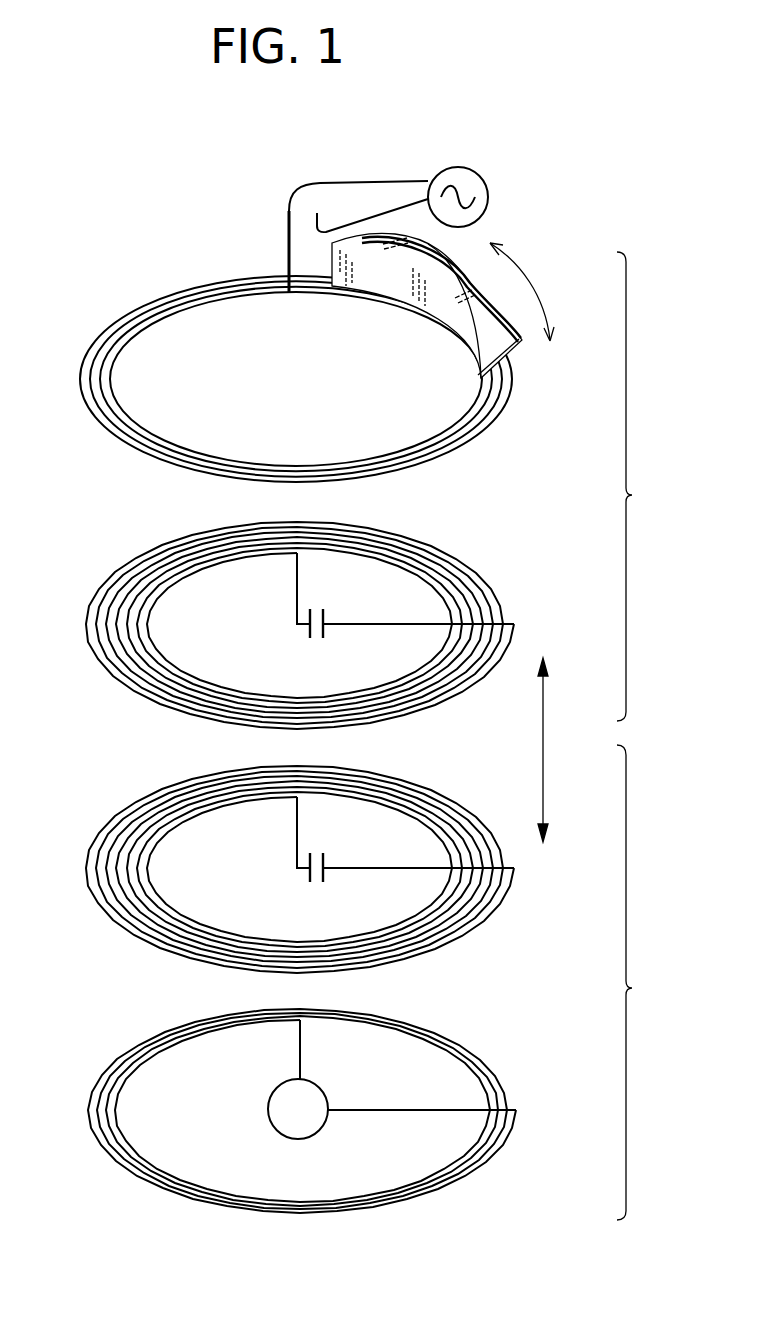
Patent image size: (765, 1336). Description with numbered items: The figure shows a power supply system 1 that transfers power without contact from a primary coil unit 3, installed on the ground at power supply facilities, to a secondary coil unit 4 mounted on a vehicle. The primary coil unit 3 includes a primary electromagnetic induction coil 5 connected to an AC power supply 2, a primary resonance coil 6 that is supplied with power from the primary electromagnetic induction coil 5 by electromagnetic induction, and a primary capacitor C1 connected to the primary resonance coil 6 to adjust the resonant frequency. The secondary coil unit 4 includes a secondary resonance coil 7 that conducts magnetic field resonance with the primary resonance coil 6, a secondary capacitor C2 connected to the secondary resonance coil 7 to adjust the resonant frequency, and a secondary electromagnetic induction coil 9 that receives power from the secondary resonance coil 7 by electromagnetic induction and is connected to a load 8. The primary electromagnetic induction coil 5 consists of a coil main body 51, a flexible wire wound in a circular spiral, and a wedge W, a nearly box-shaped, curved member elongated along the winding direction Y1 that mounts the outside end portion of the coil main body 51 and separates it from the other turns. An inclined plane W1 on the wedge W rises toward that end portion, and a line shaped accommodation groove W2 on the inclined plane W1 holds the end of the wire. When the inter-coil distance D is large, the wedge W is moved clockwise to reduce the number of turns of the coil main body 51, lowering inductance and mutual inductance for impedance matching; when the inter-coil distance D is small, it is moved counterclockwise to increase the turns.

The power supply system 1 is at (581, 172).
The AC power supply 2 is at (487, 171).
The primary coil unit 3 is at (638, 486).
The secondary coil unit 4 is at (638, 982).
The primary electromagnetic induction coil 5 is at (163, 288).
The coil main body 51 is at (111, 370).
The primary resonance coil 6 is at (482, 576).
The secondary resonance coil 7 is at (482, 818).
The load 8 is at (268, 1093).
The secondary electromagnetic induction coil 9 is at (481, 1064).
The wedge W is at (328, 265).
The inclined plane W1 is at (433, 268).
The line shaped accommodation groove W2 is at (467, 288).
The winding direction Y1 is at (545, 284).
The primary capacitor C1 is at (329, 612).
The secondary capacitor C2 is at (329, 854).
The inter-coil distance D is at (544, 737).